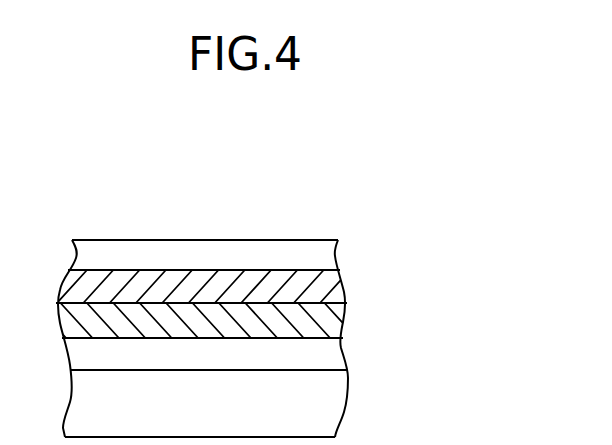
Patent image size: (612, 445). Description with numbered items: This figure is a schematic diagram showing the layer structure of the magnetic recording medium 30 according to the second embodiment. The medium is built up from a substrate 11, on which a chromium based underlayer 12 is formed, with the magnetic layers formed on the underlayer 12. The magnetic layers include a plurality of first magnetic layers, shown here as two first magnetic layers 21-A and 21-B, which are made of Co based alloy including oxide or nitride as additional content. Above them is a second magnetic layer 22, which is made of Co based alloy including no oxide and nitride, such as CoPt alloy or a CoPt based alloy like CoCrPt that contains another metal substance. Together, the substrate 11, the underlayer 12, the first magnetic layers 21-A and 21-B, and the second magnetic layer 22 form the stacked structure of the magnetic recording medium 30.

The magnetic recording medium 30 is at (352, 218).
The second magnetic layer 22 is at (337, 253).
The first magnetic layer 21-B is at (341, 287).
The first magnetic layer 21-A is at (342, 323).
The chromium based underlayer 12 is at (343, 353).
The substrate 11 is at (347, 403).